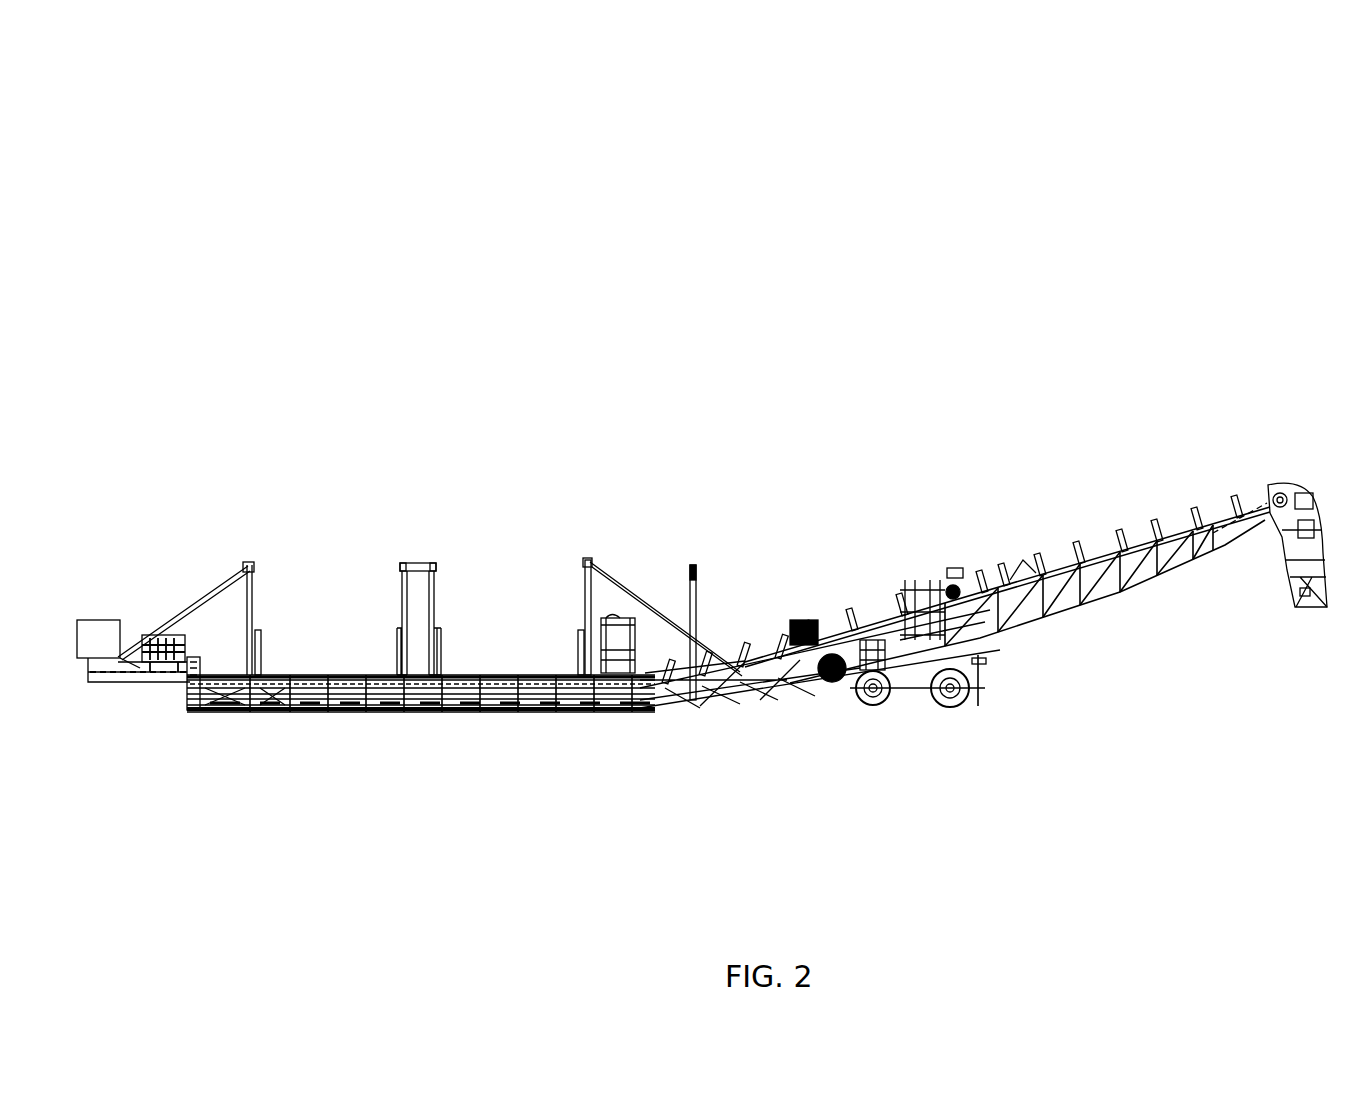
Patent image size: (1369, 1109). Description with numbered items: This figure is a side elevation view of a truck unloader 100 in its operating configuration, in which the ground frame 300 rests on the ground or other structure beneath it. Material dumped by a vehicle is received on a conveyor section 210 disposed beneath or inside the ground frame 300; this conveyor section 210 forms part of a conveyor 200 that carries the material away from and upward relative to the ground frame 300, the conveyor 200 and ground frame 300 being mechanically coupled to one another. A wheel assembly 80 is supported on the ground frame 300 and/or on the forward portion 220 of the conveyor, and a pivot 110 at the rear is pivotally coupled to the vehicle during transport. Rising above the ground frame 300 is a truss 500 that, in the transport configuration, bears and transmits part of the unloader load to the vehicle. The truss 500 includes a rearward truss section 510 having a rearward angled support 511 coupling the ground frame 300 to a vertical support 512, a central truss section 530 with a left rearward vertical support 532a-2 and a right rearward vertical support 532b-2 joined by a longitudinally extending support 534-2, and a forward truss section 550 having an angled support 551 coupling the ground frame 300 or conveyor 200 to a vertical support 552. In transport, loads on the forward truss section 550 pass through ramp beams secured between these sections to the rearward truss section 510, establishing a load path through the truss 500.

The truck unloader 100 is at (1150, 148).
The conveyor 200 is at (940, 330).
The conveyor section 210 is at (420, 752).
The forward portion of the conveyor 220 is at (975, 525).
The ground frame 300 is at (473, 722).
The pivot 110 is at (95, 698).
The wheel assembly 80 is at (922, 730).
The truss 500 is at (268, 385).
The rearward truss section 510 is at (258, 517).
The rearward angled support 511 is at (207, 585).
The vertical support 512 is at (257, 590).
The central truss section 530 is at (398, 578).
The longitudinally extending support 534-2 is at (422, 563).
The left rearward vertical support 532a-2 is at (398, 587).
The right rearward vertical support 532b-2 is at (438, 620).
The forward truss section 550 is at (608, 532).
The angled support 551 is at (663, 592).
The vertical support 552 is at (568, 580).